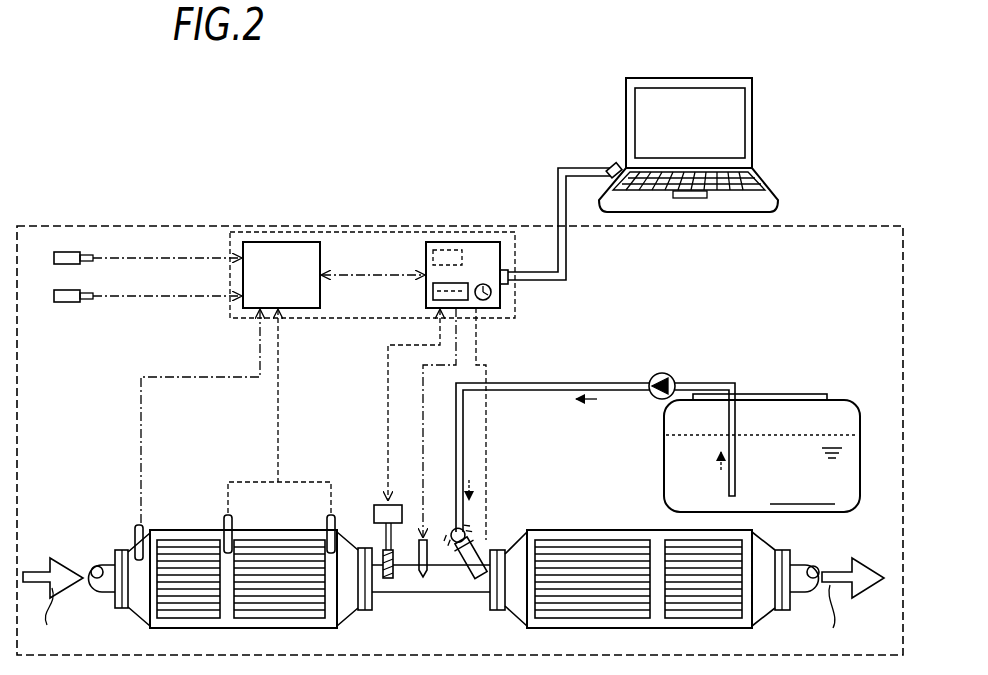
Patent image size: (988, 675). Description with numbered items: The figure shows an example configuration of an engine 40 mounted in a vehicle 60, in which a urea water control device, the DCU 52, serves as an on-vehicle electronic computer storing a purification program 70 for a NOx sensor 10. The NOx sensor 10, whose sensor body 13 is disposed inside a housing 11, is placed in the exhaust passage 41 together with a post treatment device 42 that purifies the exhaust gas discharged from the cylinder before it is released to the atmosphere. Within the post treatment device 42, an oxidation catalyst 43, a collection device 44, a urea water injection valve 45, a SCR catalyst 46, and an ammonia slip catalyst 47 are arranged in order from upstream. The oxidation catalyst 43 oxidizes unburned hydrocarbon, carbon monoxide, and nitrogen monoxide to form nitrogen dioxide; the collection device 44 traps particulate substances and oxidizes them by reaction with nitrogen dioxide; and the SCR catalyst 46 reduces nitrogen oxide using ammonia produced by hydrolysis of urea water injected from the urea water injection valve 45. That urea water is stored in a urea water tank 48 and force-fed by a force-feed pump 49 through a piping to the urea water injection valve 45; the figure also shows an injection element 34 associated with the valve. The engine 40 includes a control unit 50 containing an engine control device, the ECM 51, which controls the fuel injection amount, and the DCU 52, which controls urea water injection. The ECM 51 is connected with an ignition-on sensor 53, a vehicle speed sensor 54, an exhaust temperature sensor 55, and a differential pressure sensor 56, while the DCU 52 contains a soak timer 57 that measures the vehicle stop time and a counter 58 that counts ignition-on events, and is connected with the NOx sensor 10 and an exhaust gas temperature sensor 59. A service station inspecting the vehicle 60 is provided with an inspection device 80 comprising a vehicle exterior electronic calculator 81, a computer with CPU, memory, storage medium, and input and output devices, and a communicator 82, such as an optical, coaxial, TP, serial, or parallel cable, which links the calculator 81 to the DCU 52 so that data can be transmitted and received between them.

The NOx sensor 10 is at (380, 530).
The housing 11 is at (397, 566).
The sensor body 13 is at (390, 582).
The injection valve 34 is at (382, 503).
The engine 40 is at (100, 225).
The exhaust passage 41 is at (463, 593).
The post treatment device 42 is at (243, 517).
The oxidation catalyst 43 is at (175, 540).
The collection device 44 is at (310, 540).
The urea water injection valve 45 is at (466, 532).
The SCR catalyst 46 is at (595, 540).
The ammonia slip catalyst 47 is at (668, 540).
The urea water tank 48 is at (853, 400).
The force-feed pump 49 is at (668, 372).
The control unit 50 is at (258, 228).
The engine control device (ECM) 51 is at (290, 240).
The urea water control device (DCU) 52 is at (485, 242).
The ignition-on sensor 53 is at (57, 266).
The vehicle speed sensor 54 is at (68, 303).
The exhaust temperature sensor 55 is at (137, 524).
The differential pressure sensor 56 is at (228, 512).
The soak timer 57 is at (490, 297).
The counter 58 is at (432, 292).
The exhaust gas temperature sensor 59 is at (427, 540).
The vehicle 60 is at (127, 180).
The purification program 70 is at (432, 250).
The inspection device 80 is at (703, 179).
The vehicle exterior electronic calculator 81 is at (752, 120).
The communicator 82 is at (558, 190).